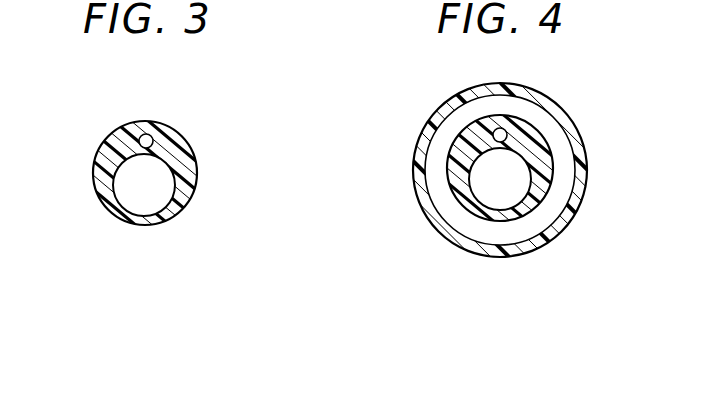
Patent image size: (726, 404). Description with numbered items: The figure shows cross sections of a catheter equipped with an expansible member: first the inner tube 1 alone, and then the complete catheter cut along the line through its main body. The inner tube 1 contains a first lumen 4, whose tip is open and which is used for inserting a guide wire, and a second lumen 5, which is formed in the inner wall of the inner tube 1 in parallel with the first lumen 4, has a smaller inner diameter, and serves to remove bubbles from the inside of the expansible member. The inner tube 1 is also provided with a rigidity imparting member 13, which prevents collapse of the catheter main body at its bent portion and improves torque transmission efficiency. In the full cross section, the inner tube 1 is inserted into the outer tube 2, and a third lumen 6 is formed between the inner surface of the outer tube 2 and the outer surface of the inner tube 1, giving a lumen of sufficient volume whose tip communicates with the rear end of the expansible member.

In FIG. 3, the inner tube 1 is at (107, 172).
In FIG. 4, the inner tube 1 is at (547, 150).
In FIG. 4, the outer tube 2 is at (416, 144).
In FIG. 3, the first lumen 4 is at (160, 182).
In FIG. 4, the first lumen 4 is at (488, 160).
In FIG. 3, the second lumen 5 is at (152, 139).
In FIG. 4, the second lumen 5 is at (505, 134).
In FIG. 4, the third lumen 6 is at (560, 182).
In FIG. 3, the rigidity imparting member 13 is at (103, 193).
In FIG. 4, the rigidity imparting member 13 is at (455, 188).